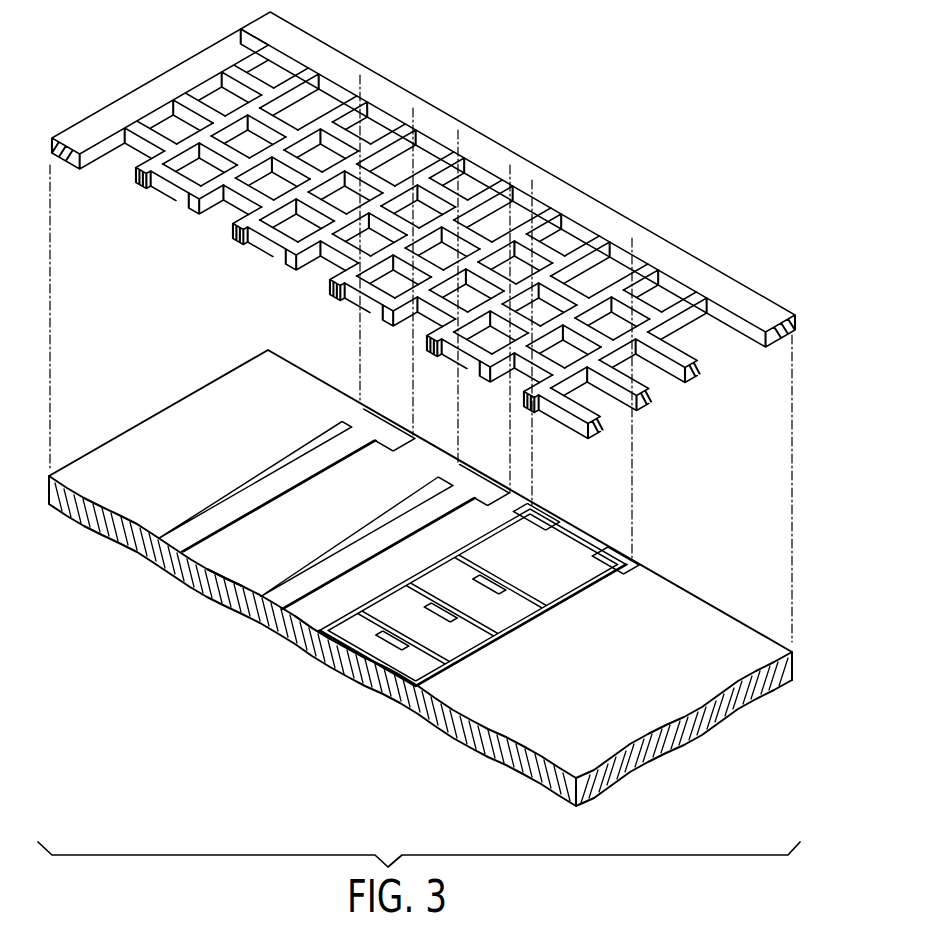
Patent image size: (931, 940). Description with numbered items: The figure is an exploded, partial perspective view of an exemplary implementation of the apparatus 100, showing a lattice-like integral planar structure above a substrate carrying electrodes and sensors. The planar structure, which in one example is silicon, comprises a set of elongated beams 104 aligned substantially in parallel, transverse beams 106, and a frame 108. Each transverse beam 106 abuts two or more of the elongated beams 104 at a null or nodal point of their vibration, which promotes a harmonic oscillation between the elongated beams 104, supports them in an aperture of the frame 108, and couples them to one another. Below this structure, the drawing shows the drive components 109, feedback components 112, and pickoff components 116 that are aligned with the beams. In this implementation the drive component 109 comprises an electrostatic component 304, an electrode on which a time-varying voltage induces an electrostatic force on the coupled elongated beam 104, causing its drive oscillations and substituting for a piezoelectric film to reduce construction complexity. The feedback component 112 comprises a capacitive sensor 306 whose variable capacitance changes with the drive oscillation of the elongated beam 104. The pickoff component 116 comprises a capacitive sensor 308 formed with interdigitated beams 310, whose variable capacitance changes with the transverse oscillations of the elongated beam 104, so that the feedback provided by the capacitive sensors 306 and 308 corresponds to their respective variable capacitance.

The apparatus 100 is at (420, 578).
The elongated beam 104 is at (375, 211).
The transverse beam 106 is at (518, 179).
The frame 108 is at (423, 234).
The drive component 109 is at (212, 561).
The feedback component 112 is at (302, 621).
The pickoff component 116 is at (537, 517).
The electrostatic component 304 is at (282, 485).
The capacitive sensor 306 is at (377, 541).
The capacitive sensor 308 is at (480, 598).
The interdigitated beam 310 is at (441, 612).